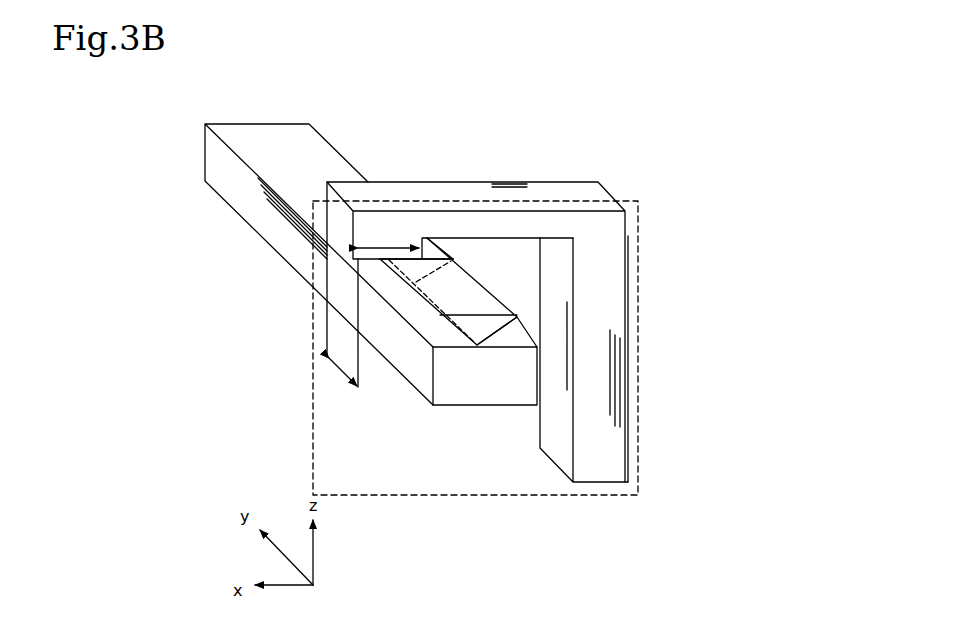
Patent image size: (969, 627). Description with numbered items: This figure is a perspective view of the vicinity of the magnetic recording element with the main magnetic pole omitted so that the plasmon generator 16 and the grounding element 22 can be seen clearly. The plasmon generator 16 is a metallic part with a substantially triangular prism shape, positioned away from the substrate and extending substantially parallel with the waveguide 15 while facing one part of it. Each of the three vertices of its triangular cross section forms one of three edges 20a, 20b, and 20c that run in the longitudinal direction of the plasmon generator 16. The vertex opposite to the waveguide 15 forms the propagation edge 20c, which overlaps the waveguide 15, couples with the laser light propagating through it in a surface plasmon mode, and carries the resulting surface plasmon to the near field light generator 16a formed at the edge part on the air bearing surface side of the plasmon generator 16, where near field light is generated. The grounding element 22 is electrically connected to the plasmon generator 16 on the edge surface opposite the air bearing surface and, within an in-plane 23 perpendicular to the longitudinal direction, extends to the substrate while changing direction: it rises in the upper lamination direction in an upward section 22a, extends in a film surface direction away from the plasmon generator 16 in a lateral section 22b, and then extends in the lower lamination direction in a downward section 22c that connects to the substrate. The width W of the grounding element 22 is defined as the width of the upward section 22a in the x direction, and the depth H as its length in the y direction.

The waveguide 15 is at (265, 124).
The plasmon generator 16 is at (535, 278).
The near field light generator 16a is at (477, 345).
The edge 20a is at (423, 303).
The edge 20b is at (479, 293).
The propagation edge 20c is at (450, 270).
The grounding element 22 is at (456, 284).
The upward section 22a is at (343, 228).
The lateral section 22b is at (532, 192).
The downward section 22c is at (598, 365).
The in-plane 23 is at (638, 468).